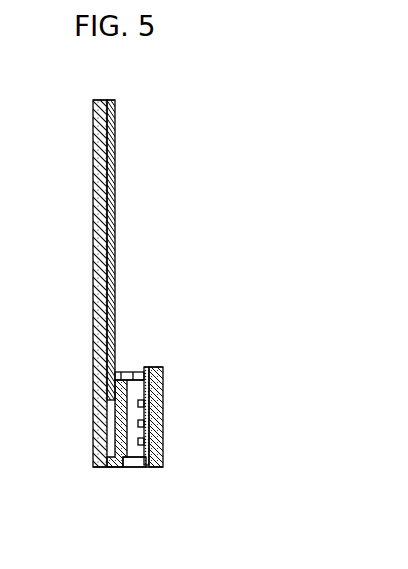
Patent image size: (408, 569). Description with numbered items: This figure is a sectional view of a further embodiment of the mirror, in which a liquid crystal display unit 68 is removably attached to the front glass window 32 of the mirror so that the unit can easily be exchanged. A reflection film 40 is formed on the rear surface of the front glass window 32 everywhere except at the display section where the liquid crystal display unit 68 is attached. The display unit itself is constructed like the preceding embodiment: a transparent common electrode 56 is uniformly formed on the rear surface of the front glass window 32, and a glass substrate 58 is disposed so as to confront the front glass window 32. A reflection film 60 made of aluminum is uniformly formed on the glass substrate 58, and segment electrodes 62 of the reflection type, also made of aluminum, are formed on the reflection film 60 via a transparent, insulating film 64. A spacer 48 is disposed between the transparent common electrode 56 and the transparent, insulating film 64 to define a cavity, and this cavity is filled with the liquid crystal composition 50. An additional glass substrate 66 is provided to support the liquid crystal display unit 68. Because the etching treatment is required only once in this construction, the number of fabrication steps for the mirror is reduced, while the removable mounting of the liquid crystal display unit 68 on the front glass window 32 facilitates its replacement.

The front glass window 32 is at (93, 140).
The reflection film 40 is at (116, 140).
The spacer 48 is at (133, 377).
The transparent common electrode 56 is at (126, 372).
The transparent, insulating film 64 is at (146, 368).
The reflection film 60 is at (163, 383).
The glass substrate 58 is at (163, 408).
The segment electrodes 62 is at (155, 443).
The additional glass substrate 66 is at (115, 468).
The liquid crystal composition 50 is at (133, 468).
The liquid crystal display unit 68 is at (148, 470).